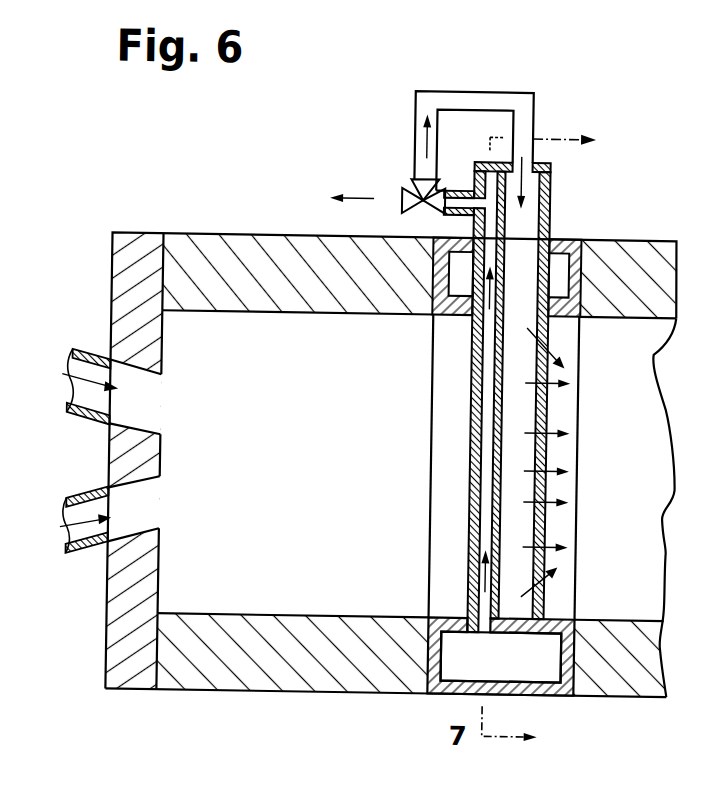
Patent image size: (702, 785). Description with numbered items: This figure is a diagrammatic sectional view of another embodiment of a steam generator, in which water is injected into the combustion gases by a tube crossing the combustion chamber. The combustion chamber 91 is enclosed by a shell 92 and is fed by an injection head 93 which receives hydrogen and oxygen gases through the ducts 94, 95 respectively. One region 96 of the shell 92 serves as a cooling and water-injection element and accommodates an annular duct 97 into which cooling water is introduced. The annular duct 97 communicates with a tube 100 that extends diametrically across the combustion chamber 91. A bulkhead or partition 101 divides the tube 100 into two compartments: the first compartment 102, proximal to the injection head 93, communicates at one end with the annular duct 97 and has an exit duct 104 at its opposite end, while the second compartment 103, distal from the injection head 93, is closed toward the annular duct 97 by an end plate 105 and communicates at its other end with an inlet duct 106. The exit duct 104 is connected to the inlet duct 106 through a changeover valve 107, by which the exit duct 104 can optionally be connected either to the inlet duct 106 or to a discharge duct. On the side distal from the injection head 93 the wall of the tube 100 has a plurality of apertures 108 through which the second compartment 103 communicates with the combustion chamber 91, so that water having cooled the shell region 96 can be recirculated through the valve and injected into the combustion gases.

The combustion chamber 91 is at (243, 450).
The shell 92 is at (565, 617).
The injection head 93 is at (94, 590).
The duct 94 is at (86, 355).
The duct 95 is at (106, 492).
The region of the shell 96 is at (445, 703).
The annular duct 97 is at (446, 637).
The tube 100 is at (457, 366).
The bulkhead or partition 101 is at (500, 425).
The first compartment 102 is at (480, 480).
The second compartment 103 is at (517, 401).
The exit duct 104 is at (458, 188).
The end plate 105 is at (512, 633).
The inlet duct 106 is at (525, 111).
The changeover valve 107 is at (398, 180).
The apertures 108 is at (548, 497).